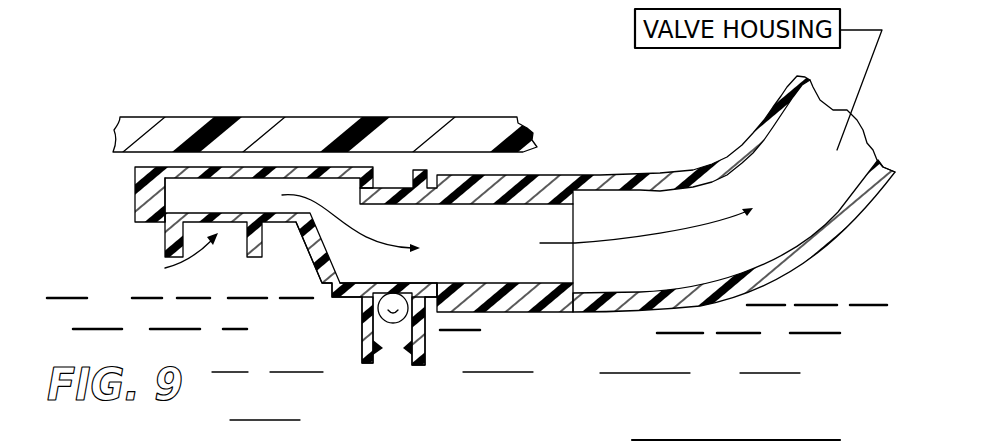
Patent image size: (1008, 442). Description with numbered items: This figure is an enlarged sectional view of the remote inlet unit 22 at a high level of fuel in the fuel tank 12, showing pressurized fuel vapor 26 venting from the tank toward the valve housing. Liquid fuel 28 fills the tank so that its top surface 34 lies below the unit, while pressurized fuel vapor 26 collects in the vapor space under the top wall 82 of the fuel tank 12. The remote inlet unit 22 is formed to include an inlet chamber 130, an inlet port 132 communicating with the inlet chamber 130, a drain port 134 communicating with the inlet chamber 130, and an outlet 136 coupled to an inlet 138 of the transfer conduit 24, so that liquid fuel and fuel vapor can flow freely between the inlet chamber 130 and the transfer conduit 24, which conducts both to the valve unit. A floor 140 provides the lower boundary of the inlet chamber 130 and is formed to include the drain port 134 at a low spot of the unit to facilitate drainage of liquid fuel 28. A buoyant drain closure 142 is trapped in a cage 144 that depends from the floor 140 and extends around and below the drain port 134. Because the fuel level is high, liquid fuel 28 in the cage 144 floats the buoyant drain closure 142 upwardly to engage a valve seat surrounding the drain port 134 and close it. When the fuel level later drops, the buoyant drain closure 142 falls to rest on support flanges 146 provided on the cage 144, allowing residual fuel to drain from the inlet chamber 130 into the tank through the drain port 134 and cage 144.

The fuel tank 12 is at (241, 110).
The top wall 82 is at (471, 133).
The remote inlet unit 22 is at (116, 224).
The transfer conduit 24 is at (646, 166).
The pressurized fuel vapor 26 is at (364, 233).
The liquid fuel 28 is at (117, 312).
The top surface 34 is at (818, 306).
The inlet chamber 130 is at (527, 216).
The inlet port 132 is at (182, 259).
The drain port 134 is at (398, 288).
The outlet 136 is at (533, 307).
The inlet 138 is at (610, 317).
The floor 140 is at (338, 293).
The buoyant drain closure 142 is at (397, 324).
The cage 144 is at (368, 328).
The support flanges 146 is at (402, 358).